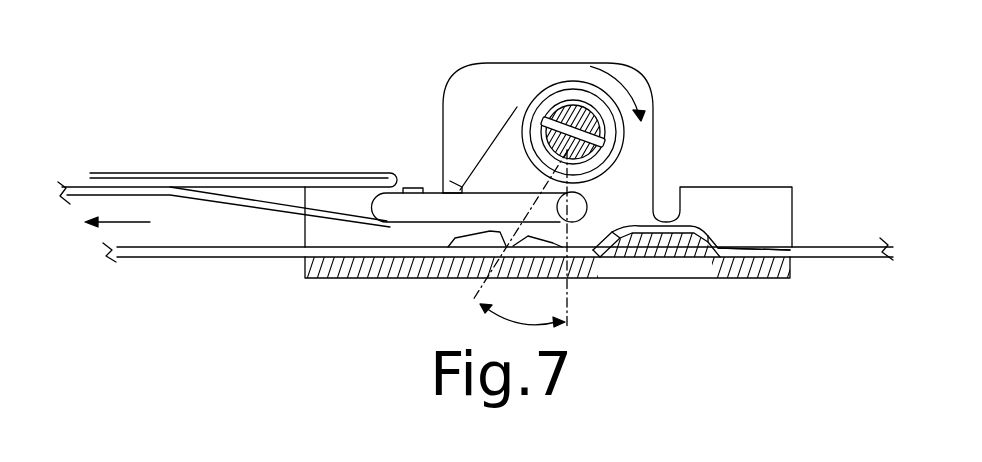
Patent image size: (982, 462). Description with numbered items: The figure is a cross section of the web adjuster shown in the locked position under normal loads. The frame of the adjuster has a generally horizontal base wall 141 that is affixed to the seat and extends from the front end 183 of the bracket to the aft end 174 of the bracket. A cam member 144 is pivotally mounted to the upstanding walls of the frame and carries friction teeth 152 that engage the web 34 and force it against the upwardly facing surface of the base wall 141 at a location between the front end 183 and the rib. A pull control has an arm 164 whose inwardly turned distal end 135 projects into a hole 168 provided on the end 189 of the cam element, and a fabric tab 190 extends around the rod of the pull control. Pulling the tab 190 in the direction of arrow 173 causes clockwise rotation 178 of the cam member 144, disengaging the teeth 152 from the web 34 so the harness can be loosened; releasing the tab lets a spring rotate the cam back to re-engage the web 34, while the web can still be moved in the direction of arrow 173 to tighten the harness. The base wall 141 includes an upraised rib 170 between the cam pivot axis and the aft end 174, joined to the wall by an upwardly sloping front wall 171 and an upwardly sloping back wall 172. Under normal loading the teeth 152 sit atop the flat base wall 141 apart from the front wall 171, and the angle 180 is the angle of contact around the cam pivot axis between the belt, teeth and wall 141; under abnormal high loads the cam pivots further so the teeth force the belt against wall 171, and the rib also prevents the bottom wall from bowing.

The cam member 144 is at (485, 143).
The end of the cam element 189 is at (517, 107).
The clockwise rotation 178 is at (637, 76).
The inwardly turned distal end 135 is at (588, 228).
The arm 164 is at (432, 208).
The fabric tab 190 is at (150, 192).
The arrow 173 is at (144, 224).
The web 34 is at (177, 250).
The front end of the bracket 183 is at (300, 277).
The base wall 141 is at (352, 279).
The friction teeth 152 is at (450, 279).
The angle 180 is at (507, 244).
The hole 168 is at (595, 278).
The upraised rib 170 is at (653, 268).
The upwardly sloping front wall 171 is at (628, 280).
The upwardly sloping back wall 172 is at (714, 258).
The aft end of the bracket 174 is at (793, 267).